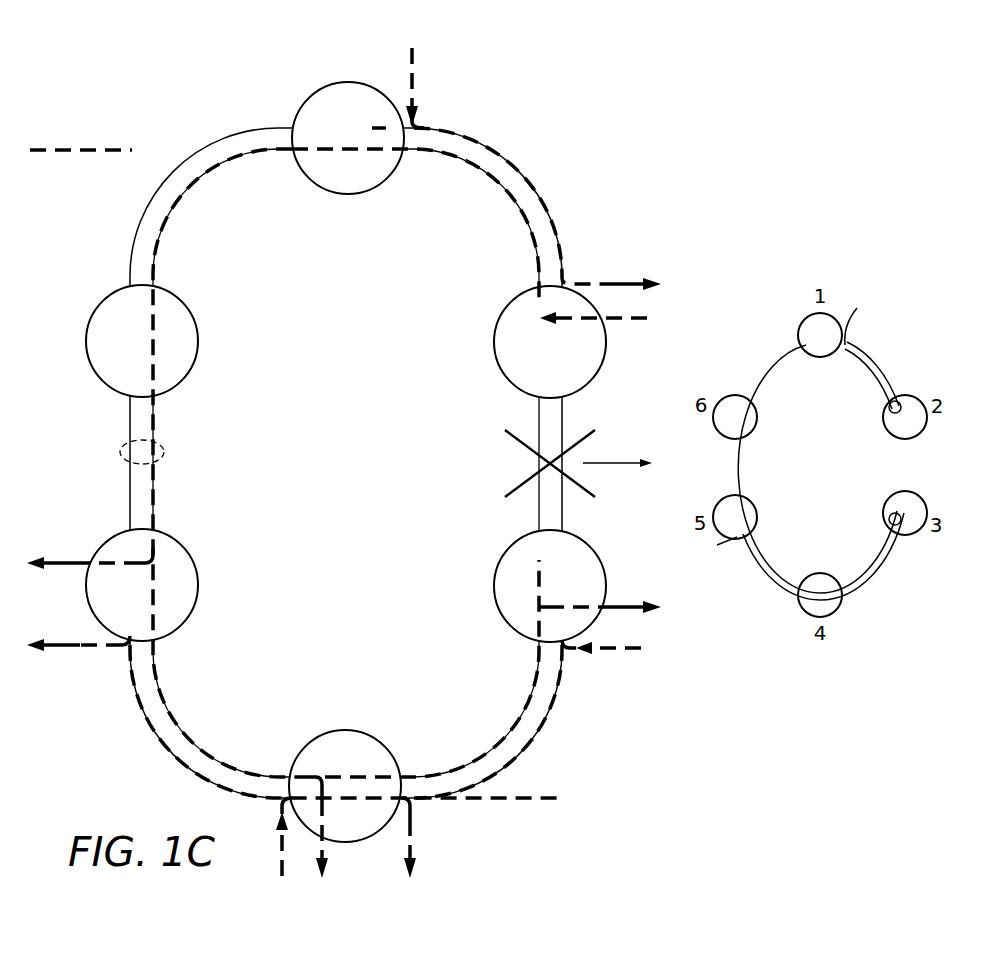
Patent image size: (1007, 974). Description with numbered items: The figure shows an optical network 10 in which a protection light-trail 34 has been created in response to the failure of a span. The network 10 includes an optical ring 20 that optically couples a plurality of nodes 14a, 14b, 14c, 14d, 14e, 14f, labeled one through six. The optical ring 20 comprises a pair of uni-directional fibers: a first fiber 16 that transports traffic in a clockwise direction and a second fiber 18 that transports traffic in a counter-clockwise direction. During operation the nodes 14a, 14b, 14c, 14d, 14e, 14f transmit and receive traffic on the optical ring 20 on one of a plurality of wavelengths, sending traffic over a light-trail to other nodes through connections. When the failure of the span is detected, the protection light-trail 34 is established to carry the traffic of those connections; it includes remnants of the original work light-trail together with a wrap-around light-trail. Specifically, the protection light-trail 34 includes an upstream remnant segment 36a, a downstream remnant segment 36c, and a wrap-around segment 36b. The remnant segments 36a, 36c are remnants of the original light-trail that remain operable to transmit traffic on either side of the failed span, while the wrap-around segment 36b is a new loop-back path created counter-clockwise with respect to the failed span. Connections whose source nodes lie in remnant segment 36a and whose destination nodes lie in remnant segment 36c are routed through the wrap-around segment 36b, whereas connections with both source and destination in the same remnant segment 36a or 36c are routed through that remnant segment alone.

The optical network 10 is at (206, 54).
The node 14a is at (343, 197).
The node 14b is at (495, 340).
The node 14c is at (494, 586).
The node 14d is at (343, 730).
The node 14e is at (200, 586).
The node 14f is at (200, 340).
The first fiber 16 is at (190, 152).
The second fiber 18 is at (170, 205).
The optical ring 20 is at (120, 453).
The protection light-trail 34 is at (80, 147).
The remnant segment 36a is at (495, 140).
The wrap-around segment 36b is at (155, 467).
The remnant segment 36c is at (548, 725).